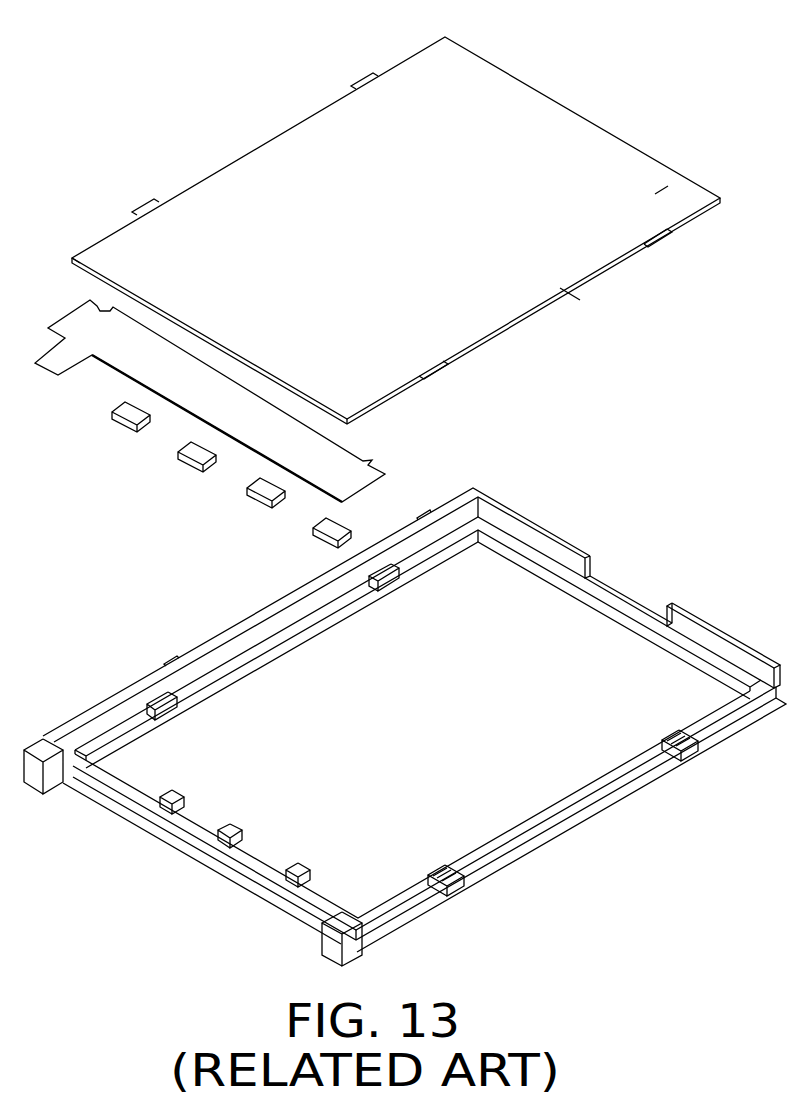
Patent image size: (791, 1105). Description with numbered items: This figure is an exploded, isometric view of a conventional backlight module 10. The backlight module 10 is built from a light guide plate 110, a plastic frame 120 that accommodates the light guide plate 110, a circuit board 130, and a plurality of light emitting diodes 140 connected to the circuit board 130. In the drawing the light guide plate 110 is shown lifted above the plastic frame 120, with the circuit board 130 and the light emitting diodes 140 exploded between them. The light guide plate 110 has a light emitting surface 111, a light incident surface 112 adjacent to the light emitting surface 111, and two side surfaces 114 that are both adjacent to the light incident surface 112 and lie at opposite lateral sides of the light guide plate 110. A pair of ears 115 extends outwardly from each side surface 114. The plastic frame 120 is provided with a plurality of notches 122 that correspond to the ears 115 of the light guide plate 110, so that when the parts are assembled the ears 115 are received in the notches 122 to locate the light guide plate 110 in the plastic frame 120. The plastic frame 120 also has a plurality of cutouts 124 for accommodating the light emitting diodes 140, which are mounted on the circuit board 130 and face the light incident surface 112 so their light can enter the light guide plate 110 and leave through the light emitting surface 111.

The backlight module 10 is at (317, 31).
The light guide plate 110 is at (648, 133).
The light emitting surface 111 is at (668, 186).
The light incident surface 112 is at (80, 266).
The side surfaces 114 is at (570, 289).
The ears 115 is at (660, 243).
The plastic frame 120 is at (588, 539).
The notches 122 is at (383, 578).
The cutouts 124 is at (120, 773).
The circuit board 130 is at (357, 463).
The light emitting diodes 140 is at (130, 418).